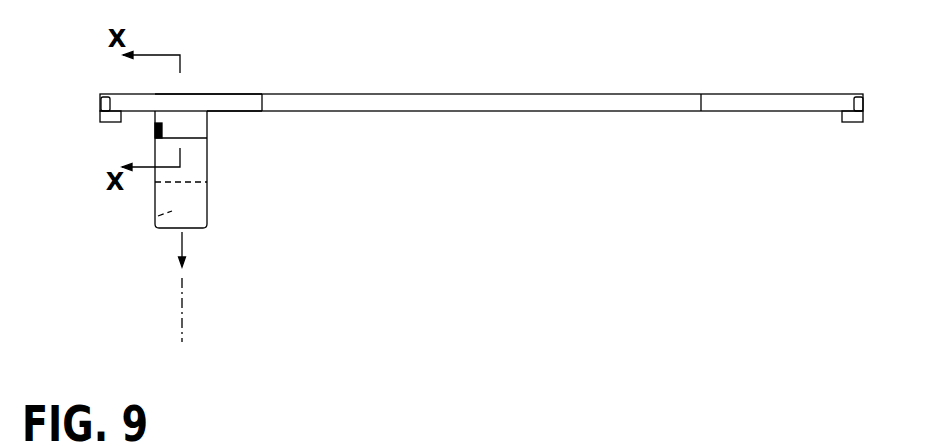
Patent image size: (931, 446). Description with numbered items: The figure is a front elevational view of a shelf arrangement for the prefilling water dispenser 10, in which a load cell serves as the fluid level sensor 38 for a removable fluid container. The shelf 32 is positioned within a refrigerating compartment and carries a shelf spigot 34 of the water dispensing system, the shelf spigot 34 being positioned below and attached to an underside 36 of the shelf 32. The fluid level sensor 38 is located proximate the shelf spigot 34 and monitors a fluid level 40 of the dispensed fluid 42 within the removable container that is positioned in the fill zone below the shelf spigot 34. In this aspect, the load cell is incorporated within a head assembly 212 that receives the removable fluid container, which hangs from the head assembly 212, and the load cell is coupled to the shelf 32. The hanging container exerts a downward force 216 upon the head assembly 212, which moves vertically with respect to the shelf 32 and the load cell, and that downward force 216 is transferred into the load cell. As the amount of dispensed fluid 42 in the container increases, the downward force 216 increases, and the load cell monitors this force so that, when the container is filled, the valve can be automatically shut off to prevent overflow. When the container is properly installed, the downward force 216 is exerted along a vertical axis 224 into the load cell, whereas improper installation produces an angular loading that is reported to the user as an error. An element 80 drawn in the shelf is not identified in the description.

The prefilling water dispenser 10 is at (253, 153).
The shelf 32 is at (427, 88).
The shelf spigot 34 is at (97, 82).
The underside 36 is at (250, 112).
The fluid level sensor 38 is at (203, 90).
The fluid level 40 is at (188, 188).
The dispensed fluid 42 is at (158, 216).
The divider wall 80 is at (243, 100).
The head assembly 212 is at (167, 120).
The downward force 216 is at (182, 242).
The vertical axis 224 is at (182, 323).